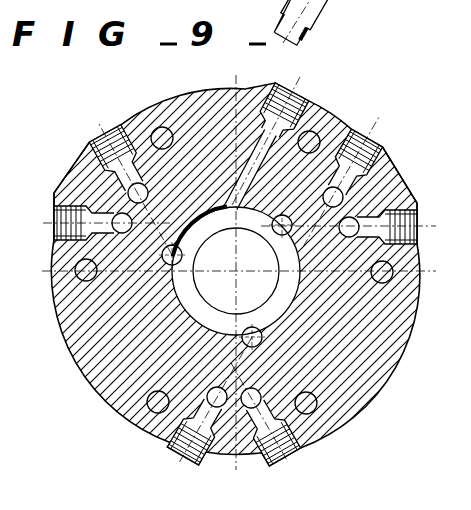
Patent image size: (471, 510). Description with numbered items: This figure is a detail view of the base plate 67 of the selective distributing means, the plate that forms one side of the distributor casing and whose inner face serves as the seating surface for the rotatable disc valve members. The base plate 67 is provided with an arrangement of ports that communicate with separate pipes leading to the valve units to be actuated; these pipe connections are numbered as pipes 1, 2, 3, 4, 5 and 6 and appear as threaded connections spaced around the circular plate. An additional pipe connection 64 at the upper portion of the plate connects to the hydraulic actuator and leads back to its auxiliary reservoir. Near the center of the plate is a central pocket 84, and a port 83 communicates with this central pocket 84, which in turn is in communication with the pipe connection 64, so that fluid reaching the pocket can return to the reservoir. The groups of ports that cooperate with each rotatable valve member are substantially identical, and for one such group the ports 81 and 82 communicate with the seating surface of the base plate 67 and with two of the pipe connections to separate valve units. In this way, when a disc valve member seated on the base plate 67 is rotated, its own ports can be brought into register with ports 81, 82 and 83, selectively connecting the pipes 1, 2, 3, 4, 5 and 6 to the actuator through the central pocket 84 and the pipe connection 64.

The pipe 1 is at (376, 132).
The pipe 2 is at (422, 237).
The pipe 3 is at (292, 453).
The pipe 4 is at (170, 449).
The pipe 5 is at (50, 228).
The pipe 6 is at (103, 126).
The pipe connection 64 is at (312, 101).
The base plate 67 is at (372, 339).
The port 81 is at (80, 193).
The port 82 is at (105, 176).
The port 83 is at (274, 231).
The central pocket 84 is at (298, 267).